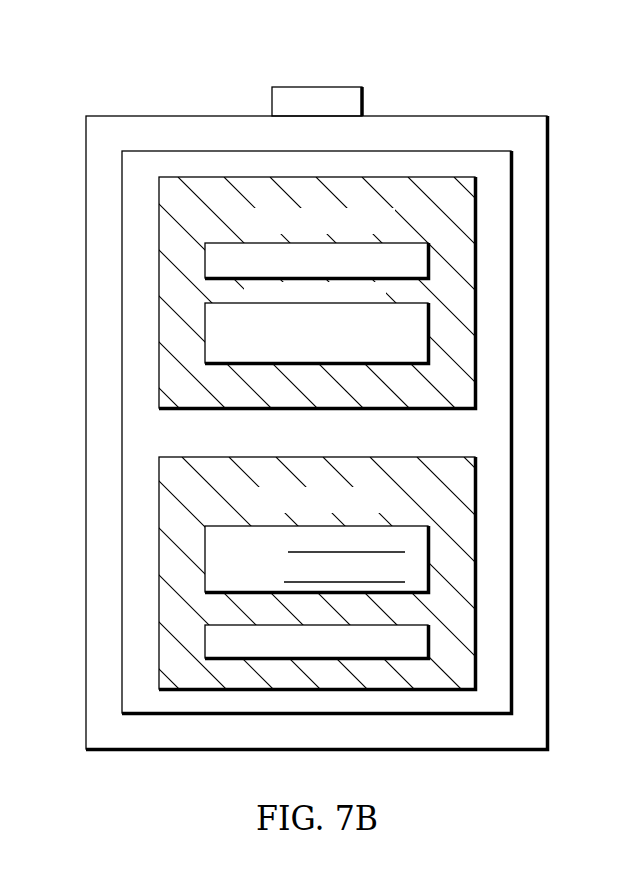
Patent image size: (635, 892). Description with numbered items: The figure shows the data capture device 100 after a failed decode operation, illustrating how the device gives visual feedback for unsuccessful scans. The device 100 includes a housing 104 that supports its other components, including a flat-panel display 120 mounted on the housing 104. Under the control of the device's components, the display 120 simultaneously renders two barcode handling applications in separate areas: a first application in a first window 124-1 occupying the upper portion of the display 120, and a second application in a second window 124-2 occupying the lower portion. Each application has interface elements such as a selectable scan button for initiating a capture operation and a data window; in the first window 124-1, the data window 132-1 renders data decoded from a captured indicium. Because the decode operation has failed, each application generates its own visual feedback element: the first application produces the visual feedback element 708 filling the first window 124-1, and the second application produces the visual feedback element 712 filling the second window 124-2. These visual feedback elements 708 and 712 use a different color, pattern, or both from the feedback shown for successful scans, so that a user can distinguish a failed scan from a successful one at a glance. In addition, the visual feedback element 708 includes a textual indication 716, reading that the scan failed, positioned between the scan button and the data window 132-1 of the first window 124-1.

The data capture device 100 is at (99, 65).
The housing 104 is at (548, 434).
The display 120 is at (122, 432).
The first window 124-1 is at (317, 293).
The second window 124-2 is at (317, 573).
The data window 132-1 is at (430, 333).
The visual feedback element 708 is at (460, 225).
The visual feedback element 712 is at (475, 575).
The textual indication 716 is at (250, 295).